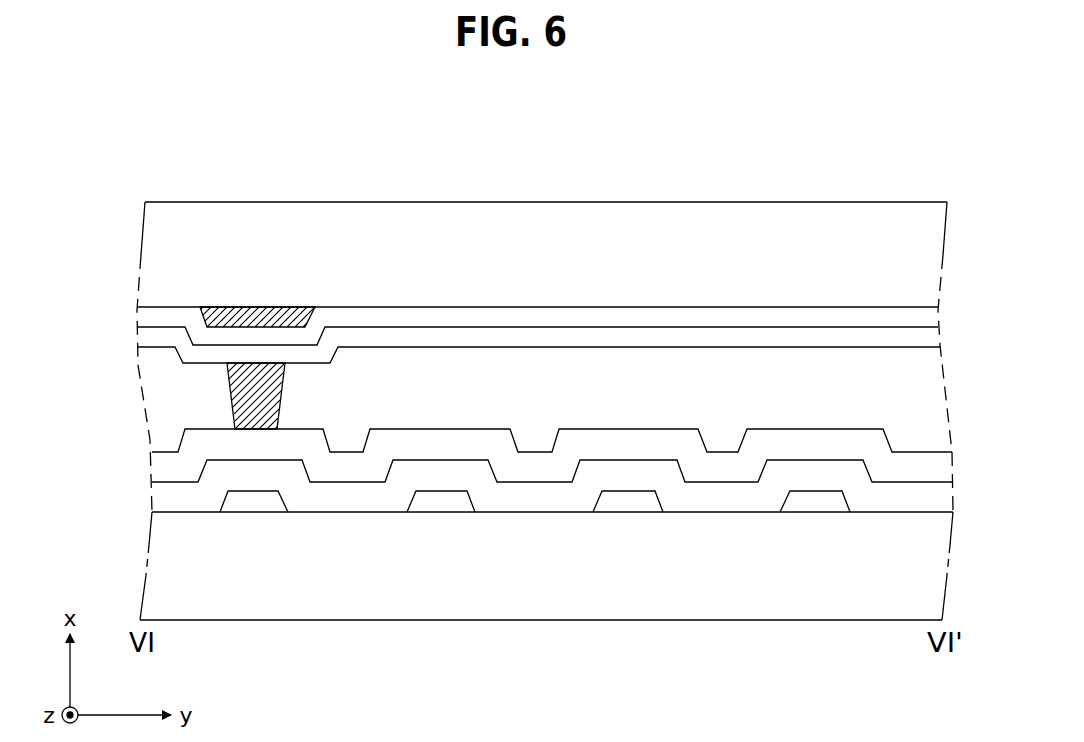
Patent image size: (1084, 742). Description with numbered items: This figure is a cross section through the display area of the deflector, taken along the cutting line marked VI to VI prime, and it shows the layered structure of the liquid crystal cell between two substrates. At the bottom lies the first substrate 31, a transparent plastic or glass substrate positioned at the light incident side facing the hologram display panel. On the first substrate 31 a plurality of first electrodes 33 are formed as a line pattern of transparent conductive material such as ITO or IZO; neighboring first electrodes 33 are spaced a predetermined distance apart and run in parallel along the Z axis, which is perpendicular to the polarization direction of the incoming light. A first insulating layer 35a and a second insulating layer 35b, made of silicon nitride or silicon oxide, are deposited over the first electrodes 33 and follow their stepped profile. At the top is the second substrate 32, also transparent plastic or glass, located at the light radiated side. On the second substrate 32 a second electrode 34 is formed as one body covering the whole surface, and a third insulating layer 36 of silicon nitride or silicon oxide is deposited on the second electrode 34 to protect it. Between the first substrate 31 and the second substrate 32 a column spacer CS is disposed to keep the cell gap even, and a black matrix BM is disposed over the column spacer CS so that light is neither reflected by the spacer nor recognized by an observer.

The first substrate 31 is at (885, 600).
The second substrate 32 is at (689, 220).
The first electrodes 33 is at (445, 503).
The second electrode 34 is at (595, 315).
The first insulating layer 35a is at (733, 498).
The second insulating layer 35b is at (815, 443).
The third insulating layer 36 is at (516, 335).
The black matrix BM is at (258, 318).
The column spacer CS is at (237, 393).